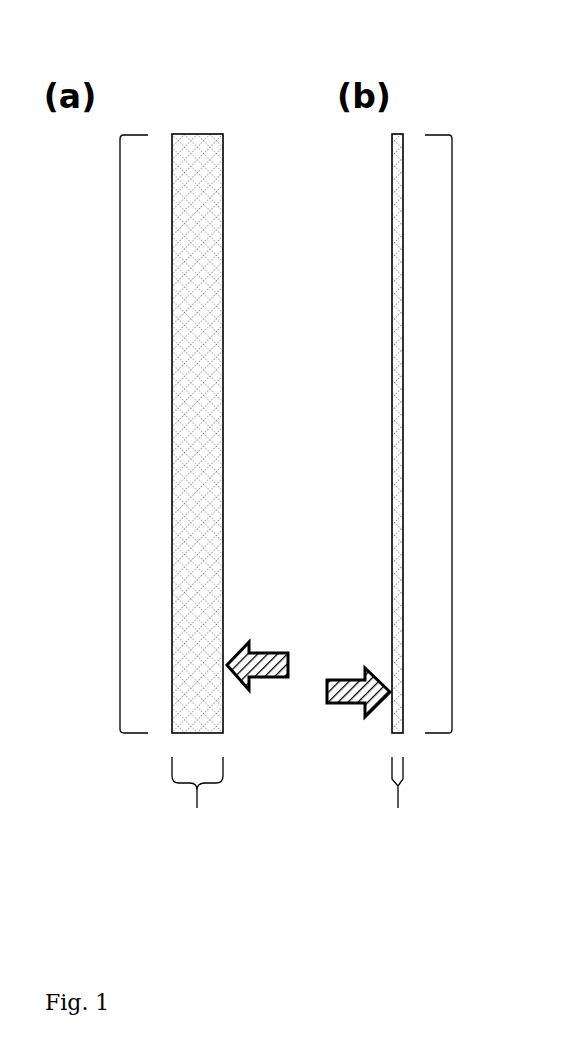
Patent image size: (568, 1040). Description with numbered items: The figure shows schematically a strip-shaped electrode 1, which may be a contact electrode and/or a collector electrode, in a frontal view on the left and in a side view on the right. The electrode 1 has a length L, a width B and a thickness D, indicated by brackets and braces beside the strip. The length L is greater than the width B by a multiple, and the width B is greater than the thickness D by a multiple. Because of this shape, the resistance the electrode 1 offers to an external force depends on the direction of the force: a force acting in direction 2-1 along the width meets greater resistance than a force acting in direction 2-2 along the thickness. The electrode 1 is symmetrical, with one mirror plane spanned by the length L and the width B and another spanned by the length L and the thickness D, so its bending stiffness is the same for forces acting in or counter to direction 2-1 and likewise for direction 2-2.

The electrode 1 is at (223, 435).
The direction along the width 2-1 is at (262, 682).
The direction along the thickness 2-2 is at (353, 710).
The length L is at (120, 433).
The width B is at (197, 808).
The thickness D is at (398, 808).